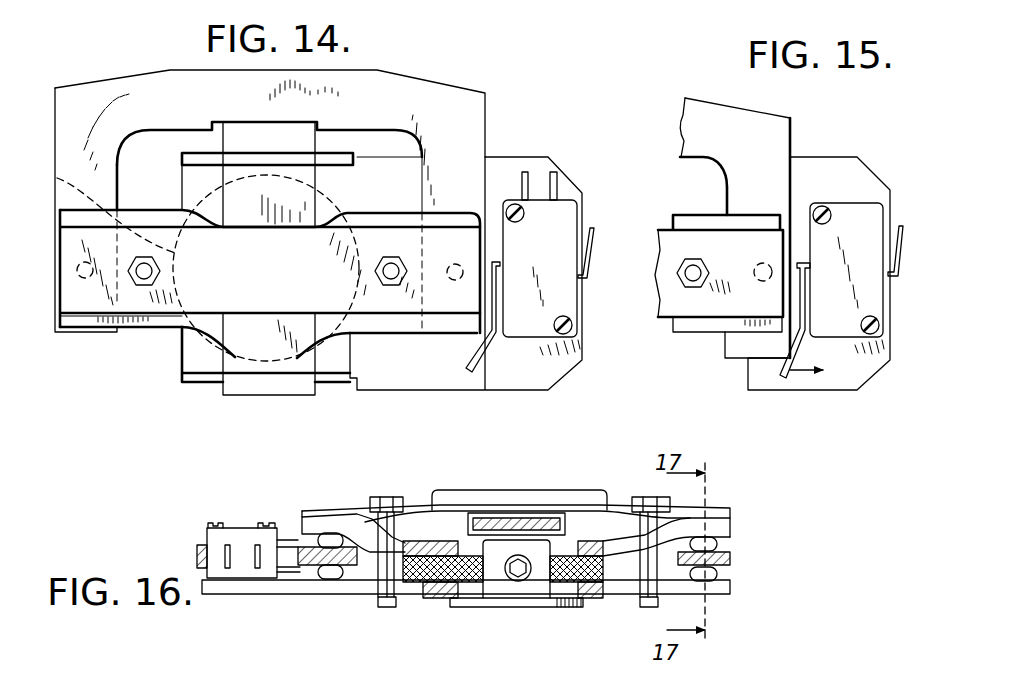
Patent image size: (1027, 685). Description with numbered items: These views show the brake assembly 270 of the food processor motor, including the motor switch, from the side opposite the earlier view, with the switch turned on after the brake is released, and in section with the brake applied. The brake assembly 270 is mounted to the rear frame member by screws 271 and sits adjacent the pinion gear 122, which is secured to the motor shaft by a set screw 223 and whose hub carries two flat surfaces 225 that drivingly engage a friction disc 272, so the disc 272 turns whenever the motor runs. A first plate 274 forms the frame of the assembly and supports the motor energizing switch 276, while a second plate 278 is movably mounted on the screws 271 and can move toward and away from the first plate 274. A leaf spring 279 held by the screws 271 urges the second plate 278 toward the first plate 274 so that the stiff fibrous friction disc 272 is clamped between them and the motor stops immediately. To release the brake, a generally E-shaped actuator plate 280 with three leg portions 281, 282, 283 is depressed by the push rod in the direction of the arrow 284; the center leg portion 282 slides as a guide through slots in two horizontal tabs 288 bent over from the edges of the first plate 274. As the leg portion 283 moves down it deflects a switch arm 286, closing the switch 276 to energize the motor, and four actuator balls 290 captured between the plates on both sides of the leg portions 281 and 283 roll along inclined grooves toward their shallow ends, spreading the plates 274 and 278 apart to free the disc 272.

In FIG. 14, the brake assembly 270 is at (143, 63).
In FIG. 16, the brake assembly 270 is at (742, 502).
In FIG. 14, the actuator plate 280 is at (115, 78).
In FIG. 15, the actuator plate 280 is at (723, 110).
In FIG. 14, the horizontal tabs 288 is at (200, 153).
In FIG. 16, the horizontal tabs 288 is at (562, 492).
In FIG. 14, the friction disc 272 is at (58, 176).
In FIG. 16, the friction disc 272 is at (445, 583).
In FIG. 14, the first plate 274 is at (182, 183).
In FIG. 15, the first plate 274 is at (812, 158).
In FIG. 16, the first plate 274 is at (293, 590).
In FIG. 14, the second plate 278 is at (393, 213).
In FIG. 15, the second plate 278 is at (692, 215).
In FIG. 16, the second plate 278 is at (340, 522).
In FIG. 14, the leaf spring 279 is at (293, 287).
In FIG. 15, the leaf spring 279 is at (707, 312).
In FIG. 16, the leaf spring 279 is at (483, 500).
In FIG. 14, the motor energizing switch 276 is at (585, 210).
In FIG. 15, the motor energizing switch 276 is at (845, 197).
In FIG. 16, the motor energizing switch 276 is at (205, 537).
In FIG. 14, the actuator balls 290 is at (76, 270).
In FIG. 15, the actuator balls 290 is at (750, 288).
In FIG. 16, the actuator balls 290 is at (346, 578).
In FIG. 14, the leg portion 281 is at (90, 335).
In FIG. 16, the leg portion 281 is at (730, 557).
In FIG. 14, the screws 271 is at (144, 287).
In FIG. 15, the screws 271 is at (693, 273).
In FIG. 16, the screws 271 is at (390, 610).
In FIG. 14, the leg portion 283 is at (443, 334).
In FIG. 15, the leg portion 283 is at (740, 360).
In FIG. 16, the leg portion 283 is at (300, 547).
In FIG. 14, the switch arm 286 is at (470, 374).
In FIG. 15, the switch arm 286 is at (793, 387).
In FIG. 14, the center leg portion 282 is at (312, 395).
In FIG. 16, the center leg portion 282 is at (541, 518).
In FIG. 15, the arrow 284 is at (755, 193).
In FIG. 16, the set screw 223 is at (523, 563).
In FIG. 16, the flat surfaces 225 is at (478, 608).
In FIG. 16, the pinion gear 122 is at (558, 607).